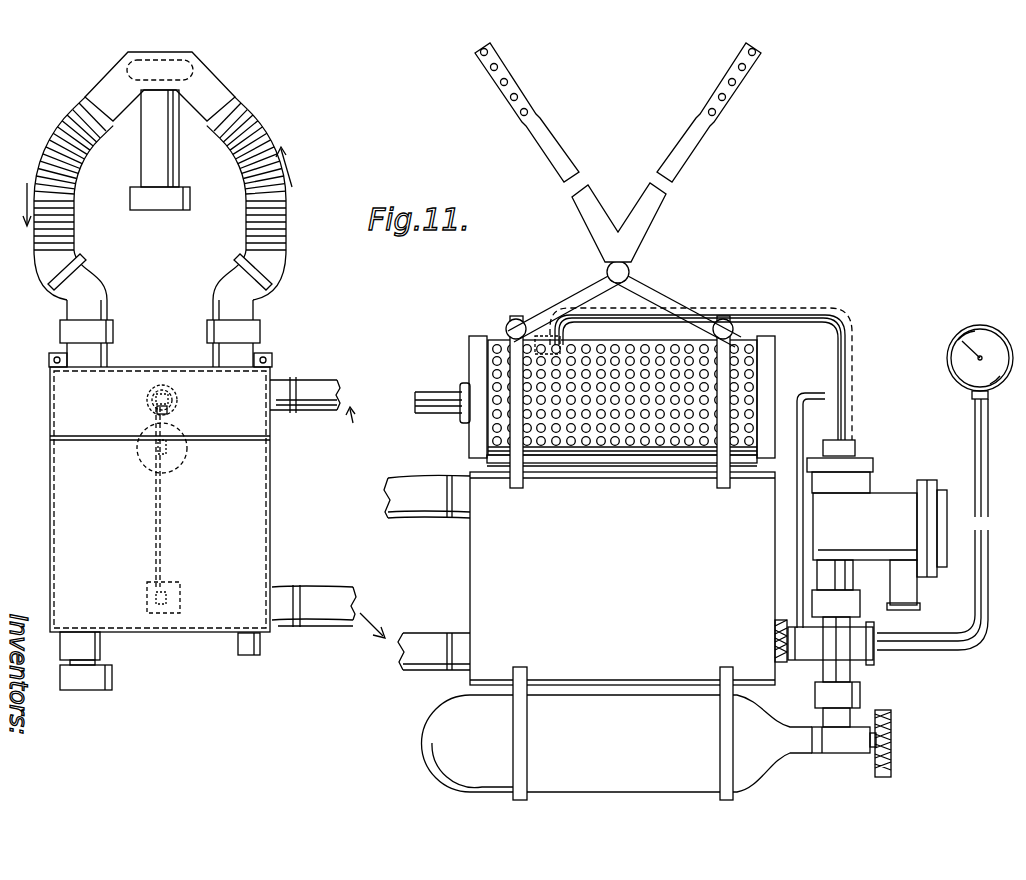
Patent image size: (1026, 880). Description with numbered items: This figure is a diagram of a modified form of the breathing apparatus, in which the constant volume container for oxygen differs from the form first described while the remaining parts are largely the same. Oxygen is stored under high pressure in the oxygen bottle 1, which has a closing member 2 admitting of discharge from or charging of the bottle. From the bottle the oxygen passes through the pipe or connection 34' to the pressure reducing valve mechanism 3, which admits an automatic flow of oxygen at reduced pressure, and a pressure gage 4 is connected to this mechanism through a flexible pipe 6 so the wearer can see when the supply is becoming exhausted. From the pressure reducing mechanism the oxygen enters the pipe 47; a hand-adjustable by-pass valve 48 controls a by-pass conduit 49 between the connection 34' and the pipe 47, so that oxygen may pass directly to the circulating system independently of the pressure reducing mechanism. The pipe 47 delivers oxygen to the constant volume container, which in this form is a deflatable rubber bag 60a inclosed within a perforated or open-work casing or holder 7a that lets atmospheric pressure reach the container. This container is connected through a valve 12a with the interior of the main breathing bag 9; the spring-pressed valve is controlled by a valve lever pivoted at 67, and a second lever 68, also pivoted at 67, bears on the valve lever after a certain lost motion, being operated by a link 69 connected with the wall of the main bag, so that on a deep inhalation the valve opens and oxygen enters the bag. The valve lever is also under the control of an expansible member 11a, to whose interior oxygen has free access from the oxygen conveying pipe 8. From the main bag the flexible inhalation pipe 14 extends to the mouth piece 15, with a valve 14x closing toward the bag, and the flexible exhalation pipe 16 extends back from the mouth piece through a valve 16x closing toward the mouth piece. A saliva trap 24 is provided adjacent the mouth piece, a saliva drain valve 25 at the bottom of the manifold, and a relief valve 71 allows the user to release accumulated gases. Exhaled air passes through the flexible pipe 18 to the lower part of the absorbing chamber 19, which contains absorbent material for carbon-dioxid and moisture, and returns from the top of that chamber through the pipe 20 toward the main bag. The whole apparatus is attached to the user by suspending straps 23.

The oxygen bottle 1 is at (443, 735).
The closing member 2 is at (891, 732).
The pressure reducing valve mechanism 3 is at (888, 503).
The pressure gage 4 is at (950, 345).
The flexible pipe 6 is at (988, 455).
The casing or holder 7a is at (665, 345).
The pipe 8 is at (322, 388).
The main breathing bag 9 is at (253, 532).
The expansible member 11a is at (177, 463).
The valve 12a is at (177, 394).
The inhalation pipe 14 is at (247, 222).
The valve 14x is at (248, 328).
The mouth piece 15 is at (183, 54).
The exhalation pipe 16 is at (70, 229).
The valve 16x is at (108, 329).
The flexible pipe 18 is at (326, 597).
The absorbing chamber 19 is at (622, 578).
The pipe 20 is at (332, 408).
The suspending straps 23 is at (648, 193).
The saliva trap 24 is at (163, 158).
The saliva drain valve 25 is at (105, 678).
The pipe or connection 34' is at (860, 693).
The pipe 47 is at (837, 387).
The by-pass valve 48 is at (781, 625).
The by-pass conduit 49 is at (797, 532).
The bag 60a is at (738, 347).
The pivot 67 is at (170, 418).
The lever 68 is at (157, 522).
The link 69 is at (150, 596).
The relief valve 71 is at (262, 650).